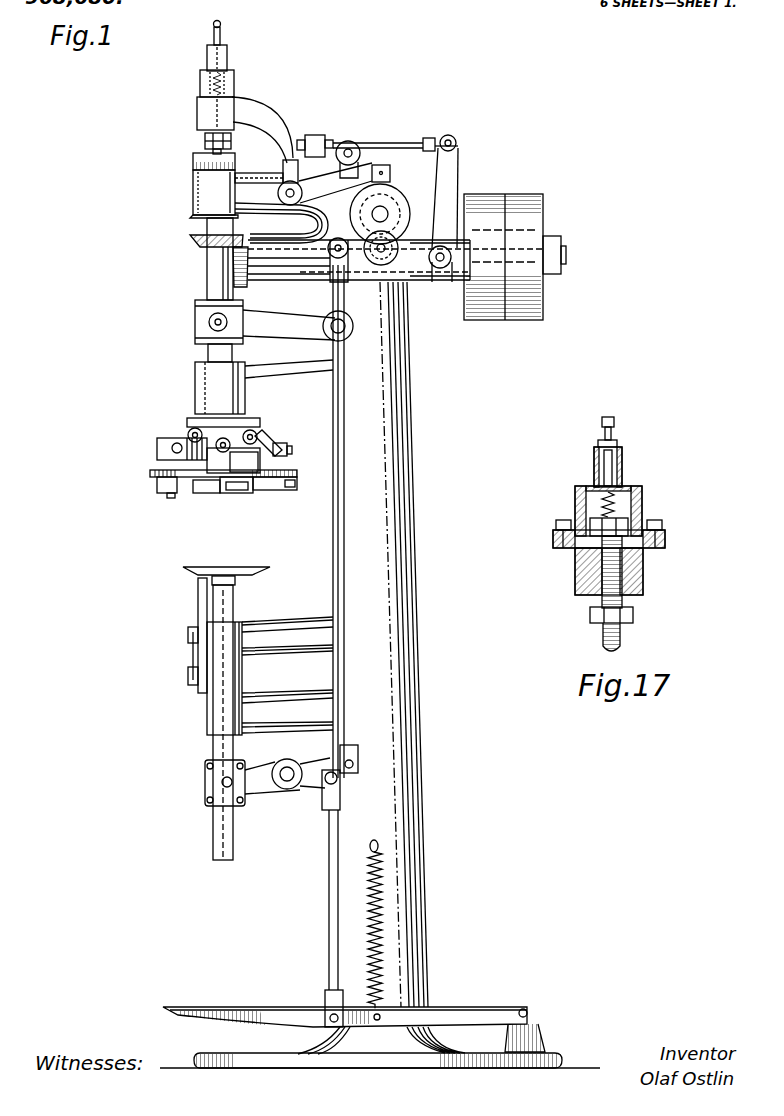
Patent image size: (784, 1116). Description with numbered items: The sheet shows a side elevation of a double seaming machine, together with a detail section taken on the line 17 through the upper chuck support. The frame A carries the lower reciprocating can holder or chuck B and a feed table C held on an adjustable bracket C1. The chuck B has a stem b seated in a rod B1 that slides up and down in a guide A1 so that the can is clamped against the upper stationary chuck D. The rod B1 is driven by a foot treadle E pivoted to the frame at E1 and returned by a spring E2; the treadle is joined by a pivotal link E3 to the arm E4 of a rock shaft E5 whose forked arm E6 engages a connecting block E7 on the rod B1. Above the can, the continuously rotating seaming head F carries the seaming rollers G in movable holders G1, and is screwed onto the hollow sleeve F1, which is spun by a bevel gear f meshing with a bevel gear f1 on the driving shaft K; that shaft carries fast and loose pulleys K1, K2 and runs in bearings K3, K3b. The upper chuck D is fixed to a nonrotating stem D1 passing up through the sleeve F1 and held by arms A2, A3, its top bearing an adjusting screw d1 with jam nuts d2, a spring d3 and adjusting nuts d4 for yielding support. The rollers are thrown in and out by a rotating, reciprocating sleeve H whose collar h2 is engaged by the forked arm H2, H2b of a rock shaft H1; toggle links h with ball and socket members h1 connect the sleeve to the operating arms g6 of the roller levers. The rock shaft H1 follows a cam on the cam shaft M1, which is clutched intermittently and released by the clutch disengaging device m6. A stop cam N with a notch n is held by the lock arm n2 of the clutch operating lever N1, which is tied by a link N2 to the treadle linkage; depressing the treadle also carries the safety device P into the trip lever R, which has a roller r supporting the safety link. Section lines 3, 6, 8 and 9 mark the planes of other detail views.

In FIG. 1, the adjusting screw d1 is at (228, 28).
In FIG. 17, the adjusting screw d1 is at (615, 420).
In FIG. 1, the spring d3 is at (234, 77).
In FIG. 17, the spring d3 is at (642, 502).
In FIG. 1, the adjusting screw nuts d4 is at (203, 140).
In FIG. 17, the adjusting screw nuts d4 is at (590, 615).
In FIG. 1, the section line 17- 17 is at (225, 19).
In FIG. 1, the trip lever R is at (283, 166).
In FIG. 1, the guide arm A2 is at (275, 193).
In FIG. 17, the guide arm A2 is at (643, 578).
In FIG. 1, the safety device P is at (313, 134).
In FIG. 1, the roller r is at (350, 141).
In FIG. 1, the notch n is at (395, 141).
In FIG. 1, the clutch operating lever N1 is at (458, 165).
In FIG. 1, the clutch disengaging device m6 is at (391, 170).
In FIG. 1, the cam shaft M1 is at (372, 214).
In FIG. 1, the stop cam N is at (396, 240).
In FIG. 1, the bearings K3 is at (315, 288).
In FIG. 1, the link N2 is at (338, 260).
In FIG. 1, the lock arm n2 is at (410, 270).
In FIG. 1, the fast pulley K1 is at (490, 192).
In FIG. 1, the loose pulley K2 is at (528, 192).
In FIG. 1, the driving shaft K is at (566, 255).
In FIG. 1, the bearings K3b is at (452, 288).
In FIG. 1, the section line 3- 3 is at (377, 158).
In FIG. 1, the section line 6- 6 is at (158, 290).
In FIG. 1, the bevel gear f1 is at (250, 246).
In FIG. 1, the bevel gear f is at (185, 238).
In FIG. 1, the hollow rotating shaft or sleeve F1 is at (207, 262).
In FIG. 1, the collar h2 is at (195, 322).
In FIG. 1, the reciprocating head or sleeve H is at (208, 352).
In FIG. 1, the forked arm H2 is at (289, 325).
In FIG. 1, the rock shaft H1 is at (345, 338).
In FIG. 1, the guide arm A3 is at (264, 387).
In FIG. 1, the forked arm H2b is at (344, 468).
In FIG. 1, the toggle-acting links h is at (260, 422).
In FIG. 1, the ball and socket joint member h1 is at (274, 440).
In FIG. 1, the operating arm g6 is at (293, 452).
In FIG. 1, the seaming roller G is at (206, 480).
In FIG. 1, the seaming head F is at (160, 479).
In FIG. 1, the movable holders G1 is at (180, 494).
In FIG. 1, the upper stationary chuck D is at (235, 494).
In FIG. 1, the section line 8- 8 is at (188, 425).
In FIG. 1, the section line 9- 9 is at (150, 476).
In FIG. 1, the frame A is at (420, 560).
In FIG. 1, the lower reciprocating can holder or chuck B is at (250, 564).
In FIG. 1, the feed table C is at (205, 600).
In FIG. 1, the stem or shank b is at (236, 582).
In FIG. 1, the stem or rod B1 is at (213, 742).
In FIG. 1, the adjustable bracket C1 is at (198, 655).
In FIG. 1, the guide A1 is at (242, 675).
In FIG. 1, the connecting block E7 is at (205, 786).
In FIG. 1, the forked arm E6 is at (258, 766).
In FIG. 1, the rock shaft E5 is at (282, 790).
In FIG. 1, the arm E4 is at (318, 790).
In FIG. 1, the pivotal link E3 is at (329, 900).
In FIG. 1, the spring E2 is at (372, 866).
In FIG. 1, the foot lever or treadle E is at (200, 1006).
In FIG. 1, the treadle pivot E1 is at (530, 1006).
In FIG. 17, the jam nuts d2 is at (622, 445).
In FIG. 17, the stationary shaft or stem D1 is at (622, 638).